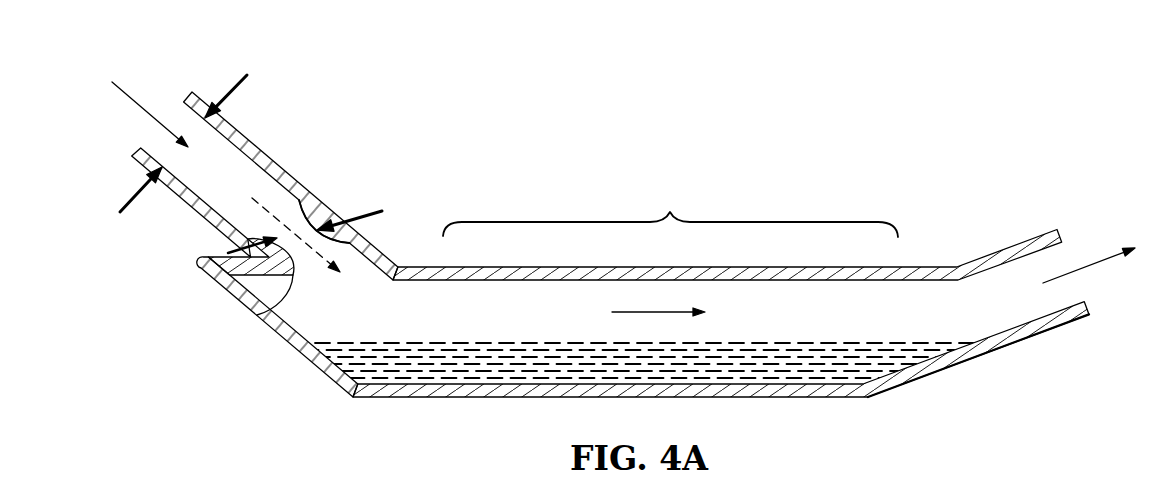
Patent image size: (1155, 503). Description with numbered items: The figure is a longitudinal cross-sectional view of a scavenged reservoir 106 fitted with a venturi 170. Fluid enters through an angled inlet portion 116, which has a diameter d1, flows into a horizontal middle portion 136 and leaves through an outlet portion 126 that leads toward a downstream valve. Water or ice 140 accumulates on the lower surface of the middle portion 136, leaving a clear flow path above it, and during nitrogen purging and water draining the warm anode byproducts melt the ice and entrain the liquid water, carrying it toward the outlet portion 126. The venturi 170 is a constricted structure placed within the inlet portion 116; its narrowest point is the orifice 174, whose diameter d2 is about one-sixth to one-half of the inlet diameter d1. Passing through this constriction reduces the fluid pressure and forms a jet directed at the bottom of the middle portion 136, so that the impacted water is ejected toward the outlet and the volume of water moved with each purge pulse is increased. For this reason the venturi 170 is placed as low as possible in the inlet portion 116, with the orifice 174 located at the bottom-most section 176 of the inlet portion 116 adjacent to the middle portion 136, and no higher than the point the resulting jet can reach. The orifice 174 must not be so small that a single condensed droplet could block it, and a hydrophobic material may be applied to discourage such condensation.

The scavenged reservoir 106 is at (610, 235).
The inlet portion 116 is at (195, 190).
The outlet portion 126 is at (1016, 327).
The middle portion 136 is at (670, 212).
The water or ice 140 is at (762, 352).
The venturi 170 is at (318, 197).
The orifice 174 is at (268, 230).
The bottom-most section 176 is at (398, 267).
The inlet portion diameter d1 is at (232, 77).
The orifice diameter d2 is at (360, 211).